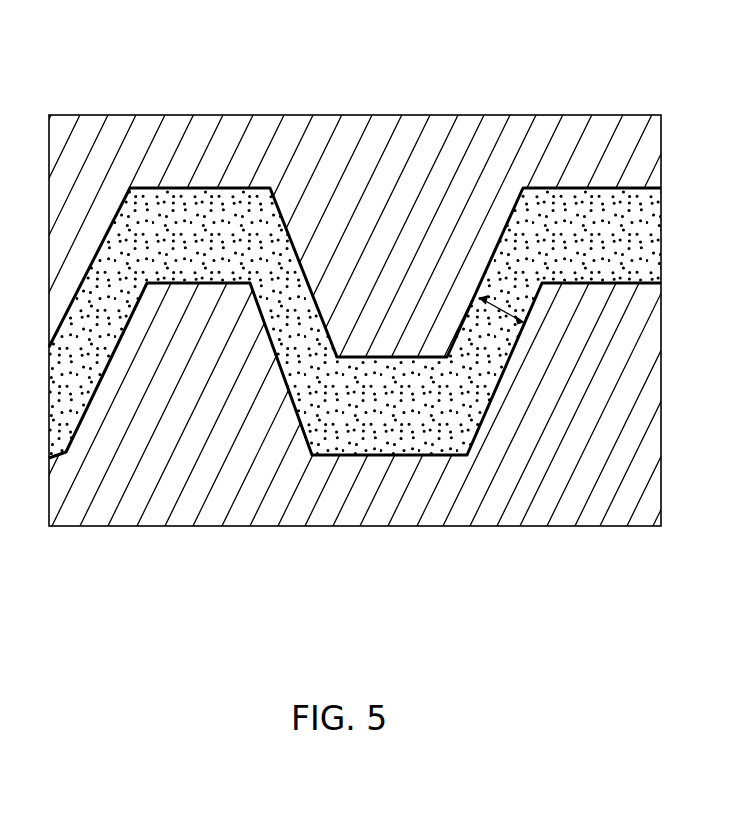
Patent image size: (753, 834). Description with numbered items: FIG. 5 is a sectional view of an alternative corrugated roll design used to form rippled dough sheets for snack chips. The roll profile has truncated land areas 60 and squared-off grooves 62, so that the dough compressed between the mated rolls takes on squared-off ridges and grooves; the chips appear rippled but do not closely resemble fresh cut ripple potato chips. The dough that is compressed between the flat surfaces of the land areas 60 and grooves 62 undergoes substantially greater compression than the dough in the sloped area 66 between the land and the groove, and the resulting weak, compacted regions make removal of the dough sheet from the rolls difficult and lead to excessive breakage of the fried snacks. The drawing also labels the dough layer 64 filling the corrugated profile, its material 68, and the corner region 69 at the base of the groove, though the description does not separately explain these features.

The truncated land areas 60 is at (397, 356).
The squared-off grooves 62 is at (212, 186).
The coating layer 64 is at (295, 323).
The area 66 is at (495, 306).
The filler material 68 is at (389, 406).
The bottom corner of layer 69 is at (313, 450).